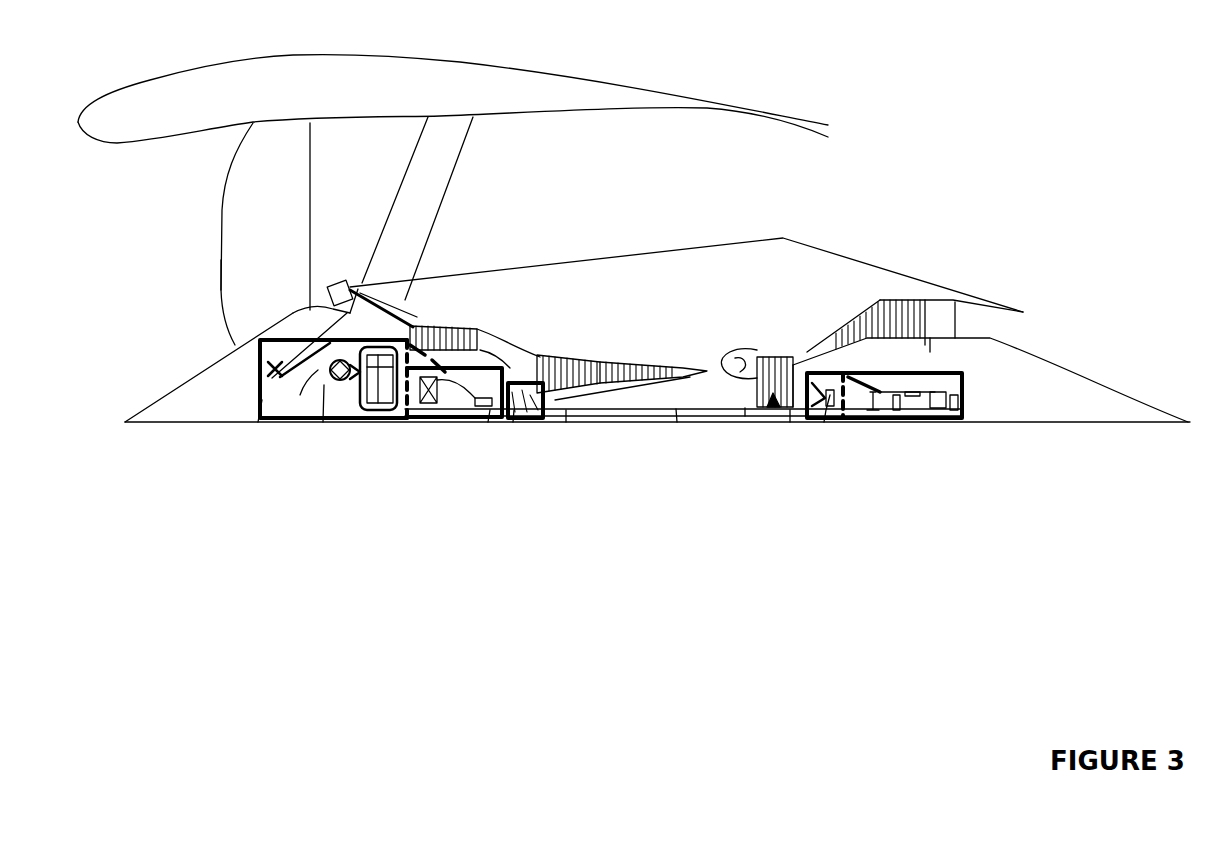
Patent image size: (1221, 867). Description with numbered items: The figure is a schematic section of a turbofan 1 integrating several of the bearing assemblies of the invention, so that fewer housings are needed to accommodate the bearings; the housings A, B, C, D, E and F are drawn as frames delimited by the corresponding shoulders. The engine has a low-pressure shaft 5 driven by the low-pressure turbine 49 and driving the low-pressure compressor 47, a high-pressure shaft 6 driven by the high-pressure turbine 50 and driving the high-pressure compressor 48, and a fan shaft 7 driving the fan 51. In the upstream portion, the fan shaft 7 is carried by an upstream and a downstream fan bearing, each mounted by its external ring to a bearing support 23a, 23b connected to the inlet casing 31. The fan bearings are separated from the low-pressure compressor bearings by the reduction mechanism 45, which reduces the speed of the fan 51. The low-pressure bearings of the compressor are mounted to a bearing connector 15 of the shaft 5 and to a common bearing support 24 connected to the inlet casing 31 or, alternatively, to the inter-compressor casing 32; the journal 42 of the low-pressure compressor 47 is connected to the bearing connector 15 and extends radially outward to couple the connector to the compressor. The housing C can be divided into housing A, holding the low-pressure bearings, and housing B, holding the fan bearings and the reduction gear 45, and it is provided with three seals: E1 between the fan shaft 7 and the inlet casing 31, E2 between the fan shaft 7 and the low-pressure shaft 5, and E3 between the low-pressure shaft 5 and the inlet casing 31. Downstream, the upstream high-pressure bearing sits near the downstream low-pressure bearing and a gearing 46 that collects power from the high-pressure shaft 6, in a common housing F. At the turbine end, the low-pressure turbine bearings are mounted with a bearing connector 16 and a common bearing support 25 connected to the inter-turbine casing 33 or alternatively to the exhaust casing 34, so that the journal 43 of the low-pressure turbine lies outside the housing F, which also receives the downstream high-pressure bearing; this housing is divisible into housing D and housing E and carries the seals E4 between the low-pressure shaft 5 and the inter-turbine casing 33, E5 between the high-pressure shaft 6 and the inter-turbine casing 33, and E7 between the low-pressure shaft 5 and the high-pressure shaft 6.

The turbofan 1 is at (908, 164).
The fan 51 is at (234, 291).
The seal E1 is at (272, 374).
The bearing support 23a is at (272, 378).
The inlet casing 31 is at (352, 283).
The seal E3 is at (424, 375).
The low-pressure compressor 47 is at (425, 328).
The journal 42 is at (486, 360).
The inter-compressor casing 32 is at (493, 342).
The bearing connector 15 is at (520, 347).
The high-pressure compressor 48 is at (590, 363).
The high-pressure turbine 50 is at (770, 358).
The inter-turbine casing 33 is at (827, 347).
The low-pressure turbine 49 is at (873, 322).
The exhaust casing 34 is at (940, 313).
The journal 43 is at (943, 371).
The bearing connector 16 is at (950, 392).
The fan shaft 7 is at (287, 422).
The bearing support 23b is at (307, 422).
The seal E2 is at (356, 395).
The reduction mechanism 45 is at (376, 403).
The common bearing support 24 is at (452, 412).
The gearing 46 is at (513, 422).
The housing F is at (546, 405).
The low-pressure shaft 5 is at (677, 422).
The high-pressure shaft 6 is at (745, 416).
The seal E5 is at (812, 392).
The seal E7 is at (790, 422).
The seal E4 is at (872, 405).
The bearing support 25 is at (912, 400).
The housing A is at (410, 502).
The housing B is at (262, 548).
The housing C is at (262, 597).
The housing D is at (847, 503).
The housing E is at (813, 550).